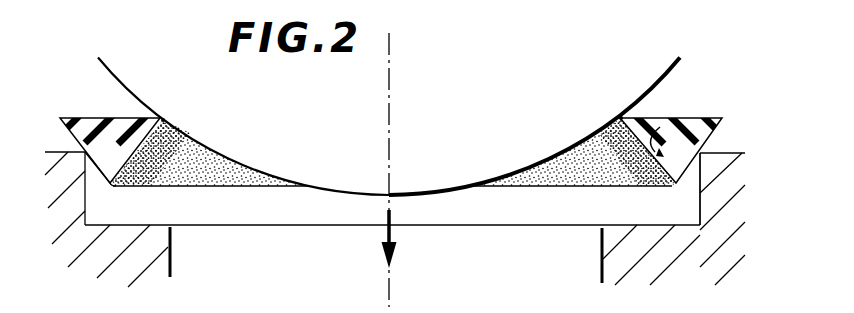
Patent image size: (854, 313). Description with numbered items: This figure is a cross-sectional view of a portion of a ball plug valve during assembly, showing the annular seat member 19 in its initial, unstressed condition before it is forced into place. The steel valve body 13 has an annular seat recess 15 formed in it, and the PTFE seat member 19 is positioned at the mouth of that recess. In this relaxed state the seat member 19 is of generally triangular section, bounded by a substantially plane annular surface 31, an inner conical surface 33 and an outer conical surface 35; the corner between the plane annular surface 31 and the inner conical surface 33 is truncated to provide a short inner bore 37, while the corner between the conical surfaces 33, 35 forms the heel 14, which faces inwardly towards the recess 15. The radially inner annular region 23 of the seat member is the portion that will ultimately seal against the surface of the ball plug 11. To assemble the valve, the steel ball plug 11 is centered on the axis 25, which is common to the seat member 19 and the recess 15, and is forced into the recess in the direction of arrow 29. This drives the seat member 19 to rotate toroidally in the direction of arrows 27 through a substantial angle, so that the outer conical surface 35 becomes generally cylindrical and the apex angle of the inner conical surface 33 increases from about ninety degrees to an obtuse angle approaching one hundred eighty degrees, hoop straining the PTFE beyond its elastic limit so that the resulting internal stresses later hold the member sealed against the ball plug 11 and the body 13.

The ball plug 11 is at (389, 127).
The valve body 13 is at (642, 246).
The heel 14 is at (111, 186).
The annular seat recess 15 is at (698, 187).
The annular seat member 19 is at (684, 112).
The radially inner annular region 23 is at (165, 119).
The axis 25 is at (388, 156).
The arrows 27 is at (106, 149).
The arrow 29 is at (382, 232).
The plane annular surface 31 is at (628, 131).
The inner conical surface 33 is at (646, 164).
The outer conical surface 35 is at (700, 140).
The inner bore 37 is at (182, 128).